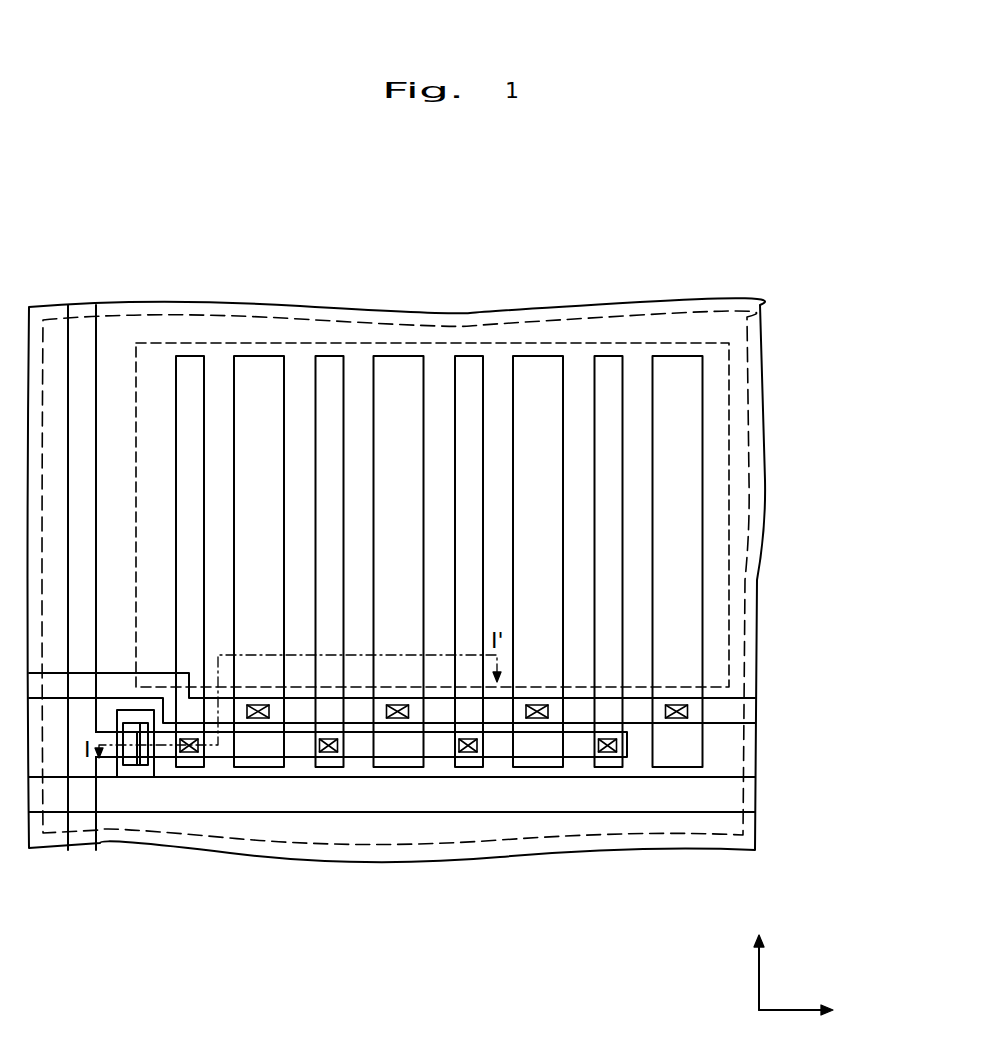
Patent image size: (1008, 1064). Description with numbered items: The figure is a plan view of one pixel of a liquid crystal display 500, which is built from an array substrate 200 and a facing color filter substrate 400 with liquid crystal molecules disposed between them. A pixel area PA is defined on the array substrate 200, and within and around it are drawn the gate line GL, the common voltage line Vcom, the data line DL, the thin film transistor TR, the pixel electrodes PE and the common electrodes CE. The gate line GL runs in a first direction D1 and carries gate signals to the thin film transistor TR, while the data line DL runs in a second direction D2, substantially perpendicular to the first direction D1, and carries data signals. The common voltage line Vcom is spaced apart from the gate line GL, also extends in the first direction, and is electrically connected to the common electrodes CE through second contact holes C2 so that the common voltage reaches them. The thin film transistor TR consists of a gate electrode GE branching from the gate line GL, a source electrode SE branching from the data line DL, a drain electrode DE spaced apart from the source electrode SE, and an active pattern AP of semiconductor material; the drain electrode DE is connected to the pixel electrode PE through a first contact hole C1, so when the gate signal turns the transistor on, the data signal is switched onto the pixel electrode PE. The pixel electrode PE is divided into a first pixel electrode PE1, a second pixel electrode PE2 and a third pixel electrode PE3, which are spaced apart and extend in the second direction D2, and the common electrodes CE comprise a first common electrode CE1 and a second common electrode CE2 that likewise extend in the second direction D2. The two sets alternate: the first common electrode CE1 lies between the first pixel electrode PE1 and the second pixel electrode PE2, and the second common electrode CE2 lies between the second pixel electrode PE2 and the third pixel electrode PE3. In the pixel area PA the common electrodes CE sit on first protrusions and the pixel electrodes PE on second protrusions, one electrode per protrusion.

The array substrate 200 is at (760, 577).
The color filter substrate 400 is at (748, 493).
The liquid crystal display 500 is at (852, 485).
The pixel area PA is at (729, 423).
The data line DL is at (82, 330).
The pixel electrode PE is at (399, 481).
The first pixel electrode PE1 is at (189, 356).
The second pixel electrode PE2 is at (331, 356).
The third pixel electrode PE3 is at (447, 507).
The common electrode CE is at (468, 661).
The first common electrode CE1 is at (267, 768).
The second common electrode CE2 is at (397, 768).
The common voltage line Vcom is at (755, 713).
The gate line GL is at (755, 797).
The thin film transistor TR is at (151, 838).
The gate electrode GE is at (153, 768).
The active pattern AP is at (133, 767).
The source electrode SE is at (108, 757).
The drain electrode DE is at (167, 752).
The first contact hole C1 is at (190, 753).
The second contact hole C2 is at (532, 719).
The first direction D1 is at (811, 1010).
The second direction D2 is at (759, 960).